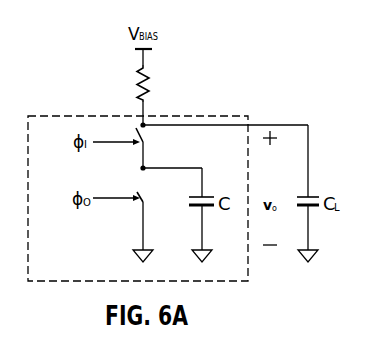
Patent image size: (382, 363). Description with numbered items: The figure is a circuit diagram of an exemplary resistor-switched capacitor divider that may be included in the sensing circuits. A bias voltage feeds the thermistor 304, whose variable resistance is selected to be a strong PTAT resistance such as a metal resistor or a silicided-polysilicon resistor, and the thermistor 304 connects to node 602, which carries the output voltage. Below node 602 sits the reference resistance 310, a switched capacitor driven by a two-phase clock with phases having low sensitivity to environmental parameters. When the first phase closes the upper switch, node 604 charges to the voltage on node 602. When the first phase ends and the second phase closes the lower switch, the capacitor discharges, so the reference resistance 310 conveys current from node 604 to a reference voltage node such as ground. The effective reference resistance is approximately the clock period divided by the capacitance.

The thermistor 304 is at (138, 73).
The reference resistance 310 is at (60, 138).
The node 602 is at (141, 124).
The node 604 is at (141, 170).